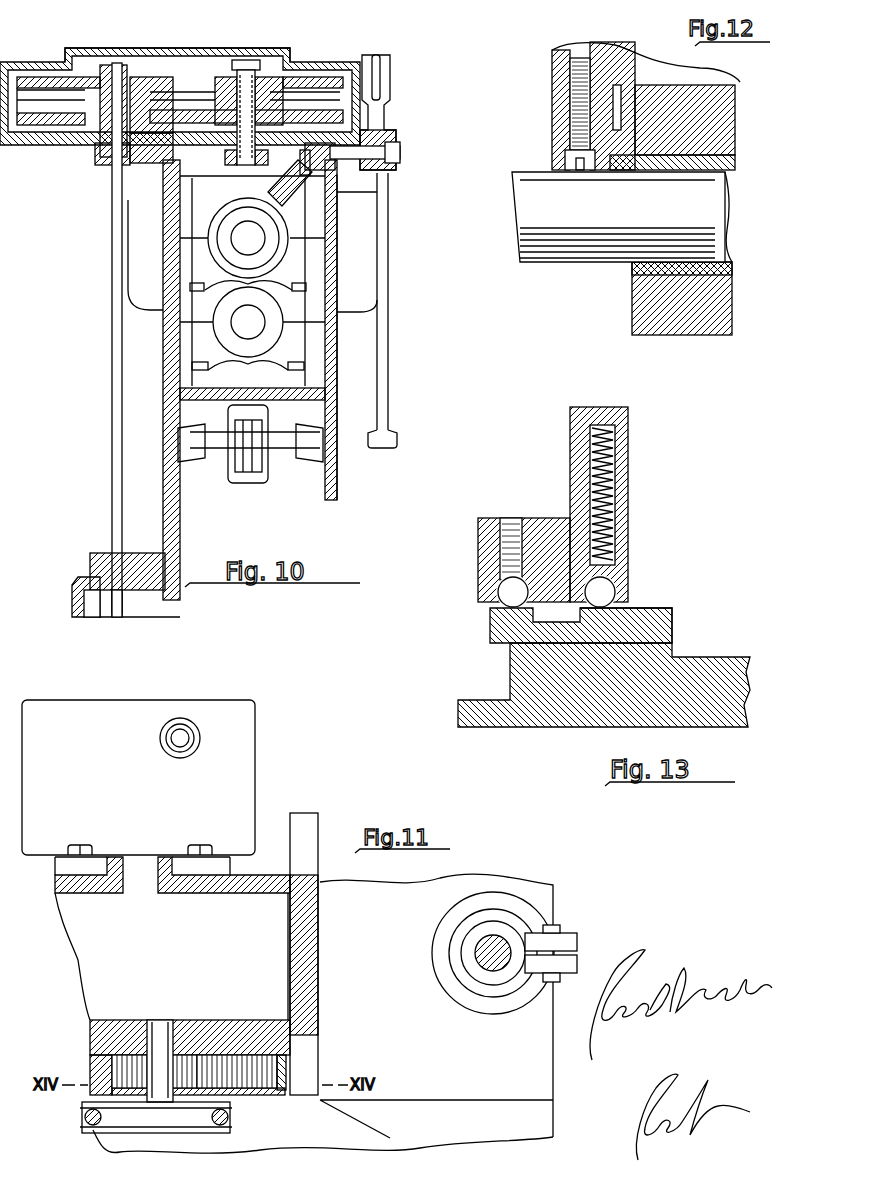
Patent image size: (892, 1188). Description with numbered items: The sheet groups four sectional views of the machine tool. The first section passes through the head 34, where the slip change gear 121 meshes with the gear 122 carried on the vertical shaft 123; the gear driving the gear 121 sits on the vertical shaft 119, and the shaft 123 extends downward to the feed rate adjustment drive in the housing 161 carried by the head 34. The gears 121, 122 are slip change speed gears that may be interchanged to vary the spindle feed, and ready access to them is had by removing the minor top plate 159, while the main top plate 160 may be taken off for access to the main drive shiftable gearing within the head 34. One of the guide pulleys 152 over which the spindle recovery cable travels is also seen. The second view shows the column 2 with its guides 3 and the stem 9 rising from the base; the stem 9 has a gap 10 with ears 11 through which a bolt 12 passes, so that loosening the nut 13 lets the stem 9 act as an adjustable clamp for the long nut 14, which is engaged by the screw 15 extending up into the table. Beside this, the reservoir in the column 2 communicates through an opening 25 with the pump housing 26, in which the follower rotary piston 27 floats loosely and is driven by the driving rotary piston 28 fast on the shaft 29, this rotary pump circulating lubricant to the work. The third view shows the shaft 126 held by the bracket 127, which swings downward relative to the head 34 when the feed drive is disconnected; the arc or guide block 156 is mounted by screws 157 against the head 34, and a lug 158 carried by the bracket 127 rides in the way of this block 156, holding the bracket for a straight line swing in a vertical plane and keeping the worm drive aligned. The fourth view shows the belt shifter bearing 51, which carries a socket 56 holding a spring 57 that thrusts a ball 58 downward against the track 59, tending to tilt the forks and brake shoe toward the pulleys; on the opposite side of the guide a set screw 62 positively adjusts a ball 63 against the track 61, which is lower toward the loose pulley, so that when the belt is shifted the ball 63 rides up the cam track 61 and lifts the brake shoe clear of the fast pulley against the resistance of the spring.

In FIG. 10, the gear 122 is at (143, 80).
In FIG. 10, the vertical shaft 119 is at (250, 60).
In FIG. 10, the minor top plate 159 is at (290, 50).
In FIG. 10, the slip change gear 121 is at (283, 88).
In FIG. 10, the main top plate 160 is at (55, 145).
In FIG. 10, the vertical shaft 123 is at (112, 205).
In FIG. 10, the head 34 is at (165, 415).
In FIG. 12, the head 34 is at (552, 75).
In FIG. 10, the guide pulley 152 is at (256, 472).
In FIG. 10, the housing 161 is at (72, 587).
In FIG. 12, the lug 158 is at (645, 68).
In FIG. 12, the bracket 127 is at (745, 72).
In FIG. 12, the screws 157 is at (570, 100).
In FIG. 12, the guide block 156 is at (553, 128).
In FIG. 12, the shaft 126 is at (565, 262).
In FIG. 13, the socket 56 is at (628, 432).
In FIG. 13, the spring 57 is at (620, 460).
In FIG. 13, the set screw 62 is at (510, 518).
In FIG. 13, the bearing 51 is at (560, 518).
In FIG. 13, the ball 58 is at (625, 585).
In FIG. 13, the track 59 is at (650, 608).
In FIG. 13, the ball 63 is at (495, 590).
In FIG. 13, the track 61 is at (492, 612).
In FIG. 11, the guides 3 is at (319, 843).
In FIG. 11, the column 2 is at (262, 875).
In FIG. 11, the stem 9 is at (498, 902).
In FIG. 11, the long nut 14 is at (510, 930).
In FIG. 11, the bolt 12 is at (558, 927).
In FIG. 11, the ears 11 is at (578, 938).
In FIG. 11, the gap 10 is at (578, 950).
In FIG. 11, the nut 13 is at (560, 976).
In FIG. 11, the screw 15 is at (475, 957).
In FIG. 11, the driving rotary piston 28 is at (125, 1060).
In FIG. 11, the shaft 29 is at (160, 1022).
In FIG. 11, the opening 25 is at (210, 1030).
In FIG. 11, the follower rotary piston 27 is at (283, 1068).
In FIG. 11, the pump housing 26 is at (232, 1094).